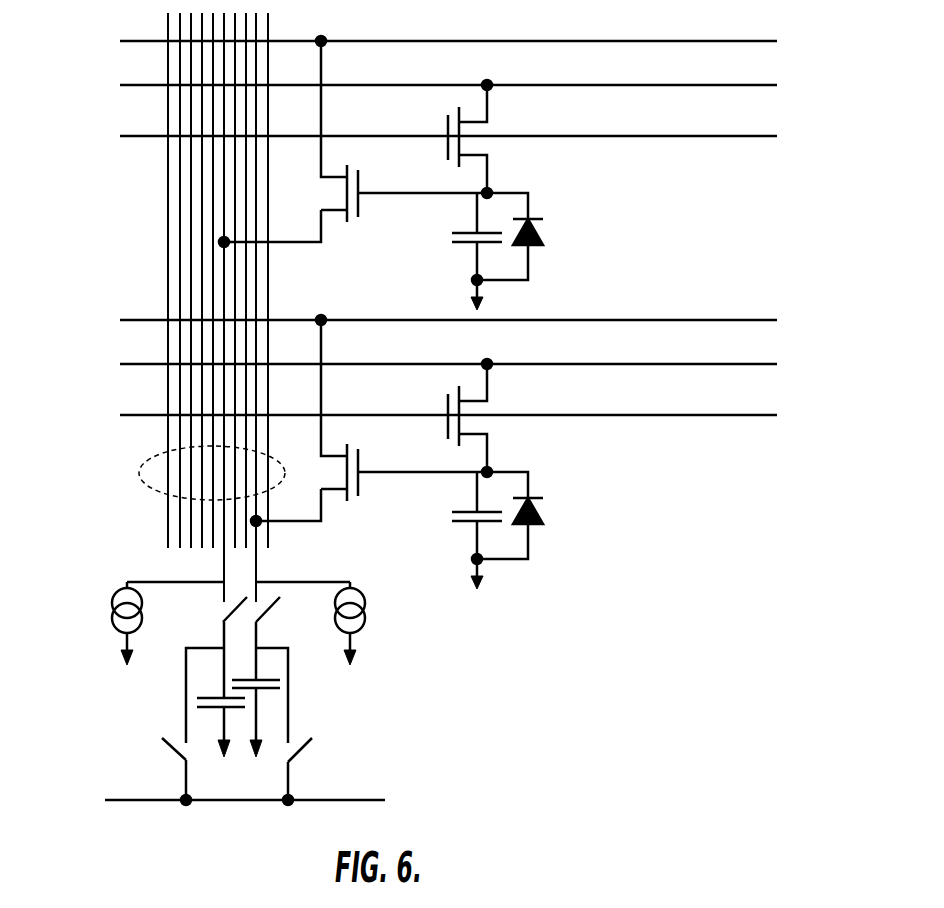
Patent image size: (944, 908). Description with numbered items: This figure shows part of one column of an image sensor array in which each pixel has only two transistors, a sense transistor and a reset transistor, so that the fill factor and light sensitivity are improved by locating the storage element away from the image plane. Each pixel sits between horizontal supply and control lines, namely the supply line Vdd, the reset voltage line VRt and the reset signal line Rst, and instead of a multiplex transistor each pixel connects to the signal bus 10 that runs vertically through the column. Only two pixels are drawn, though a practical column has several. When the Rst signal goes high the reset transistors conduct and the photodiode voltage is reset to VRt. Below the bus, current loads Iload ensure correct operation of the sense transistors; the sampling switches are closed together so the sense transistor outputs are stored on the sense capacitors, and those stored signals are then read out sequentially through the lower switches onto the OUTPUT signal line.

The signal bus 10 is at (147, 487).
The Vdd supply line Vdd is at (429, 172).
The reset voltage VRt is at (431, 216).
The Rst signal Rst is at (432, 267).
The current load Iload is at (240, 623).
The output signal OUTPUT is at (321, 799).